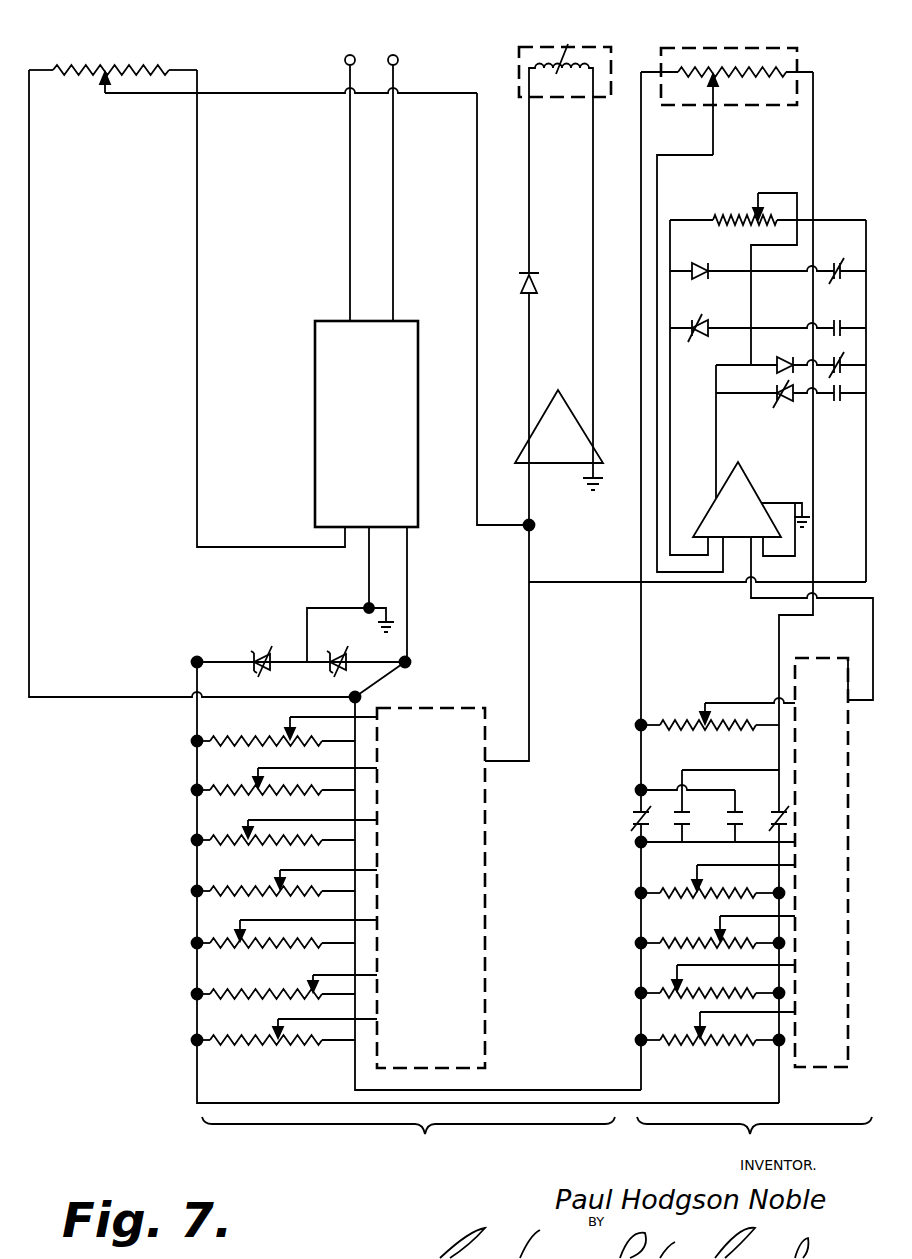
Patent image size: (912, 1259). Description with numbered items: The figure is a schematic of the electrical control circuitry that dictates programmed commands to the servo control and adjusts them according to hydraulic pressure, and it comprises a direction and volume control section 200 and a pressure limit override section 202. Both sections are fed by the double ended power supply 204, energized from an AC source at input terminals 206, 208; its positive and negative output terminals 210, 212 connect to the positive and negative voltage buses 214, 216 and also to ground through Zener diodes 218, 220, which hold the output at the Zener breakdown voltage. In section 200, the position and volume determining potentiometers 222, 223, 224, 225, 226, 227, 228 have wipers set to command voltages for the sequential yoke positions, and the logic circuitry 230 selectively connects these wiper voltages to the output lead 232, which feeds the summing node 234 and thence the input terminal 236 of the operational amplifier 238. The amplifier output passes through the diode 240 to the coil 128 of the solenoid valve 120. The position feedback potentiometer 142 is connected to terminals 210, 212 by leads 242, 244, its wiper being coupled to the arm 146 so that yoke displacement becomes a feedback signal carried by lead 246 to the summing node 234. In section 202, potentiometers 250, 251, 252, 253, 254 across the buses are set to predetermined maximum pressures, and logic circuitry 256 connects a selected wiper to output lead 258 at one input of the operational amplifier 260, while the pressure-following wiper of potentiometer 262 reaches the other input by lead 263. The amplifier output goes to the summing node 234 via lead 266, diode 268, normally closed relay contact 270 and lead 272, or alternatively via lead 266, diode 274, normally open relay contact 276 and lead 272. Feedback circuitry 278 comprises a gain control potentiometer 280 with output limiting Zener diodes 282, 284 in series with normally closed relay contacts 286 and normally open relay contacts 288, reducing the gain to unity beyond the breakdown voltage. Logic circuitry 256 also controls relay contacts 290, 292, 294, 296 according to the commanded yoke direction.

The solenoid valve 120 is at (612, 46).
The coil 128 is at (565, 54).
The position feedback potentiometer 142 is at (109, 66).
The arm 146 is at (126, 98).
The direction and volume control section 200 is at (408, 1142).
The pressure limit override section 202 is at (754, 1135).
The double ended power supply 204 is at (386, 478).
The input terminal 206 is at (347, 56).
The input terminal 208 is at (397, 56).
The positive output terminal 210 is at (190, 666).
The negative output terminal 212 is at (412, 665).
The positive voltage bus 214 is at (190, 774).
The negative voltage bus 216 is at (357, 761).
The Zener diode 218 is at (350, 602).
The Zener diode 220 is at (301, 643).
The position and volume determining potentiometer 222 is at (285, 1029).
The position and volume determining potentiometer 223 is at (285, 983).
The position and volume determining potentiometer 224 is at (285, 934).
The position and volume determining potentiometer 225 is at (285, 881).
The position and volume determining potentiometer 226 is at (285, 828).
The position and volume determining potentiometer 227 is at (285, 779).
The position and volume determining potentiometer 228 is at (285, 729).
The logic circuitry 230 is at (455, 930).
The output lead 232 is at (531, 741).
The summing node 234 is at (533, 531).
The input terminal 236 is at (522, 469).
The operational amplifier 238 is at (580, 451).
The diode 240 is at (526, 300).
The lead 242 is at (199, 360).
The lead 244 is at (32, 386).
The lead 246 is at (477, 243).
The potentiometer 250 is at (716, 972).
The potentiometer 251 is at (716, 980).
The potentiometer 252 is at (716, 930).
The potentiometer 253 is at (716, 880).
The potentiometer 254 is at (758, 722).
The logic circuitry 256 is at (836, 909).
The output lead 258 is at (873, 637).
The operational amplifier 260 is at (755, 531).
The potentiometer 262 is at (800, 70).
The lead 263 is at (714, 140).
The lead 266 is at (713, 446).
The diode 268 is at (772, 363).
The normally closed relay contact 270 is at (840, 361).
The lead 272 is at (866, 550).
The diode 274 is at (775, 416).
The normally open relay contact 276 is at (842, 404).
The feedback circuitry 278 is at (796, 312).
The gain control potentiometer 280 is at (751, 212).
The output limiting Zener diode 282 is at (752, 257).
The output limiting Zener diode 284 is at (752, 315).
The normally closed relay contact 286 is at (848, 254).
The normally open relay contact 288 is at (848, 313).
The normally open relay contact 290 is at (689, 825).
The normally closed relay contact 292 is at (630, 826).
The normally closed relay contact 294 is at (789, 818).
The normally open relay contact 296 is at (721, 835).